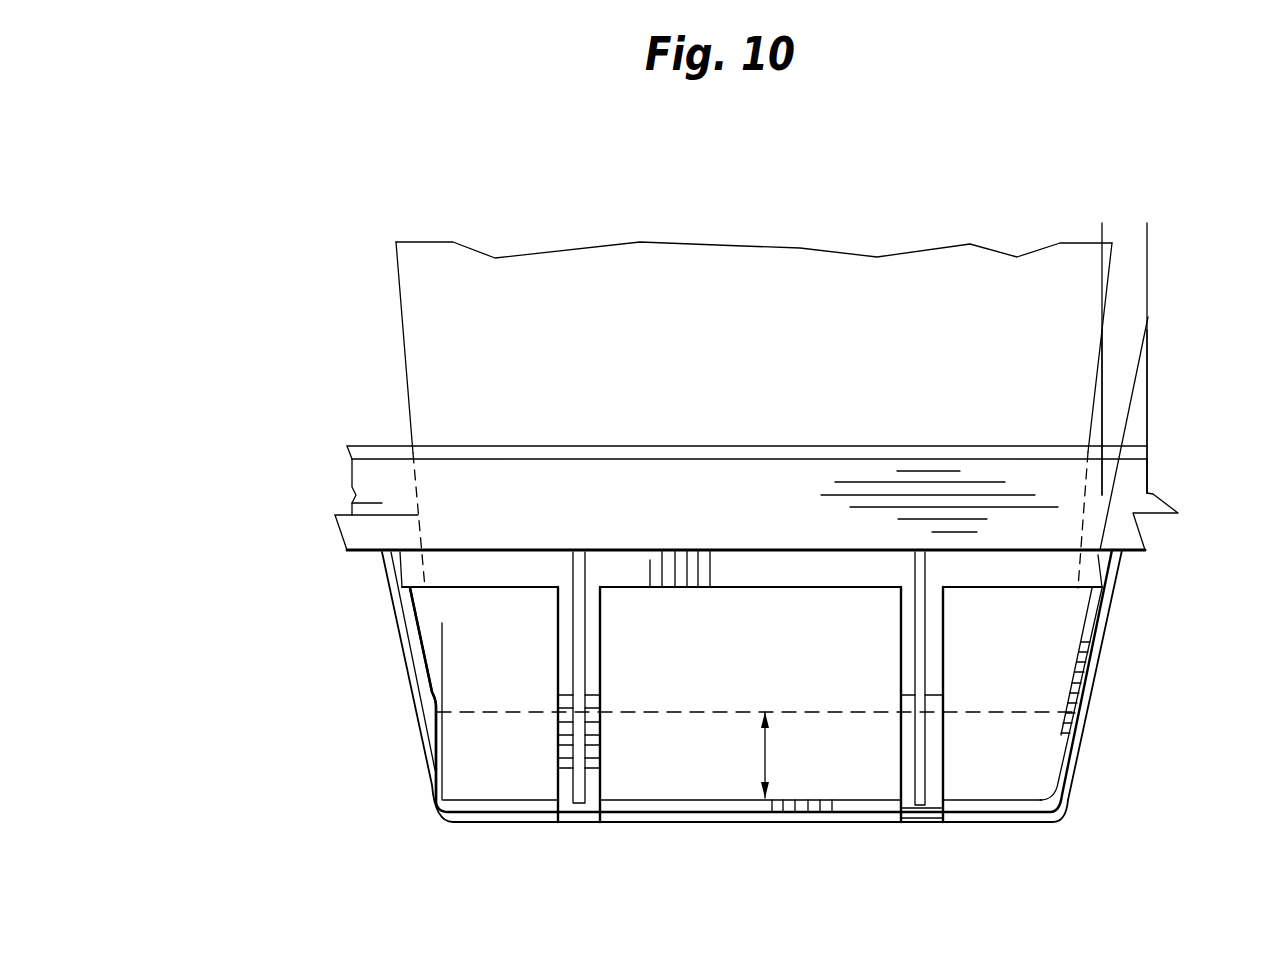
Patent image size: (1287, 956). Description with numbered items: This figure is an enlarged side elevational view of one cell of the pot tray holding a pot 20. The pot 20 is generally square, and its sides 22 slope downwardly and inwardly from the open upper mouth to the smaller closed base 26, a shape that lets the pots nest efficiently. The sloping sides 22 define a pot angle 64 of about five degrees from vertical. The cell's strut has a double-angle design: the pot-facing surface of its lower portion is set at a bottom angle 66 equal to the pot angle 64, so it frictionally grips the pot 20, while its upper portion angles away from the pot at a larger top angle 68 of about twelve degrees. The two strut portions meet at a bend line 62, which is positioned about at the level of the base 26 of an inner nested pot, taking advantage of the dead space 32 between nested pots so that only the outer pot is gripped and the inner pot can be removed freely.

The pot 20 is at (392, 395).
The sides 22 is at (400, 315).
The base 26 is at (522, 800).
The dead space 32 is at (767, 758).
The bend line 62 is at (440, 727).
The pot angle 64 is at (1122, 410).
The bottom angle 66 is at (420, 746).
The top angle 68 is at (1115, 392).